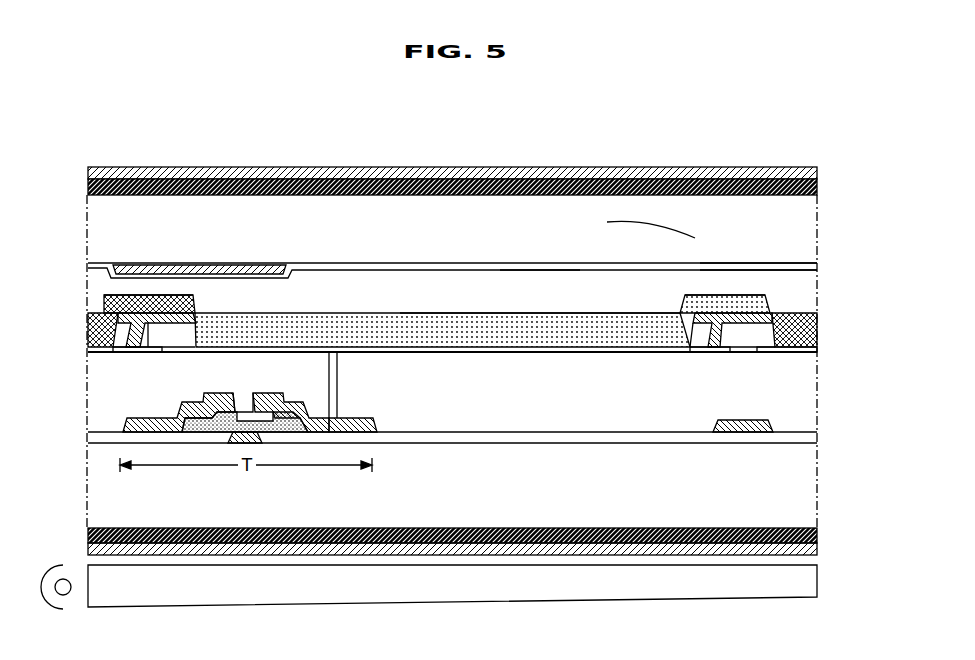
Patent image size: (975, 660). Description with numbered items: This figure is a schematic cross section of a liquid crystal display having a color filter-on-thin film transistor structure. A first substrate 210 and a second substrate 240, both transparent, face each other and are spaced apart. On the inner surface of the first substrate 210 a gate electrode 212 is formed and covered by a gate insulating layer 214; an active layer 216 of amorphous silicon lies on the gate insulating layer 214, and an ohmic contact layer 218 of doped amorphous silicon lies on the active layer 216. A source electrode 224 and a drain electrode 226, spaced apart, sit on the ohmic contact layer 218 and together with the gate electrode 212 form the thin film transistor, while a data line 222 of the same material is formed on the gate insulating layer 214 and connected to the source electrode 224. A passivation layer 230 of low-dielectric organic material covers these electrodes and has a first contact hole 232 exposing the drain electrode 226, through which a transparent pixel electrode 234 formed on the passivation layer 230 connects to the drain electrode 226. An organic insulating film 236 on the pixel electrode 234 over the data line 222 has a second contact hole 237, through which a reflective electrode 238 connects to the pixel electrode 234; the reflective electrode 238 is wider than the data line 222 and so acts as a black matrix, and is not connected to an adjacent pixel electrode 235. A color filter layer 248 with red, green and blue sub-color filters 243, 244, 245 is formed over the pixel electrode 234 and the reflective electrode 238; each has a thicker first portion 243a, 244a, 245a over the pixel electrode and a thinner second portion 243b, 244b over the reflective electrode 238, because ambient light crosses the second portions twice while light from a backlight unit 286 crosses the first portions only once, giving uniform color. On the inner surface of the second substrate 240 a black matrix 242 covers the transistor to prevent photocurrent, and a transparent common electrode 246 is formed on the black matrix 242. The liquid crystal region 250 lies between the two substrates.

The first substrate 210 is at (787, 505).
The gate electrode 212 is at (238, 440).
The gate insulating layer 214 is at (618, 440).
The active layer 216 is at (243, 410).
The ohmic contact layer 218 is at (202, 405).
The data line 222 is at (746, 420).
The source electrode 224 is at (217, 400).
The drain electrode 226 is at (365, 418).
The passivation layer 230 is at (441, 380).
The first contact hole 232 is at (333, 356).
The pixel electrode 234 is at (541, 358).
The adjacent pixel electrode 235 is at (820, 352).
The organic insulating film 236 is at (157, 348).
The second contact hole 237 is at (143, 325).
The reflective electrode 238 is at (180, 295).
The second substrate 240 is at (418, 213).
The black matrix 242 is at (213, 265).
The red sub-color filter 243 is at (129, 269).
The first portion of red sub-color filter 243a is at (93, 312).
The second portion of red sub-color filter 243b is at (131, 295).
The green sub-color filter 244 is at (585, 262).
The first portion of green sub-color filter 244a is at (620, 333).
The second portion of green sub-color filter 244b is at (700, 295).
The blue sub-color filter 245 is at (758, 274).
The first portion of blue sub-color filter 245a is at (799, 320).
The common electrode 246 is at (465, 265).
The color filter layer 248 is at (195, 178).
The liquid crystal layer 250 is at (540, 288).
The backlight unit 286 is at (793, 586).